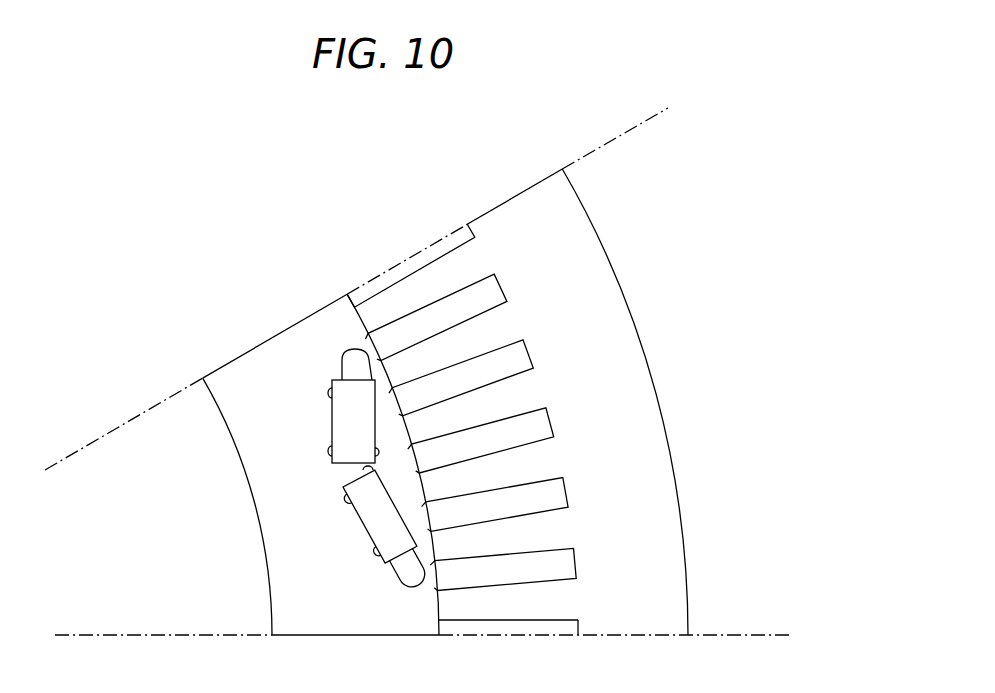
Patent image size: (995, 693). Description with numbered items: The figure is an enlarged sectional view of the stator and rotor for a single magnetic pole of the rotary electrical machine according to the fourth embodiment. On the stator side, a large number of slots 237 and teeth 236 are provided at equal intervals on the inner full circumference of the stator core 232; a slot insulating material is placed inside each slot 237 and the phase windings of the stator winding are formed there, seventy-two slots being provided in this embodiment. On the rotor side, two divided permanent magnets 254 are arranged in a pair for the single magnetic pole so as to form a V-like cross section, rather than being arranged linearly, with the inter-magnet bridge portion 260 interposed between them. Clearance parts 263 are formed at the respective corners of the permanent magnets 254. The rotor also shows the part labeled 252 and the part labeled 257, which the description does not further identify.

The stator core 232 is at (641, 338).
The teeth 236 is at (505, 325).
The slots 237 is at (500, 292).
The inner peripheral portion 252 is at (220, 377).
The divided permanent magnets 254 is at (343, 425).
The protruding tab 257 is at (350, 365).
The inter-magnet bridge portion 260 is at (355, 477).
The clearance parts 263 is at (333, 392).